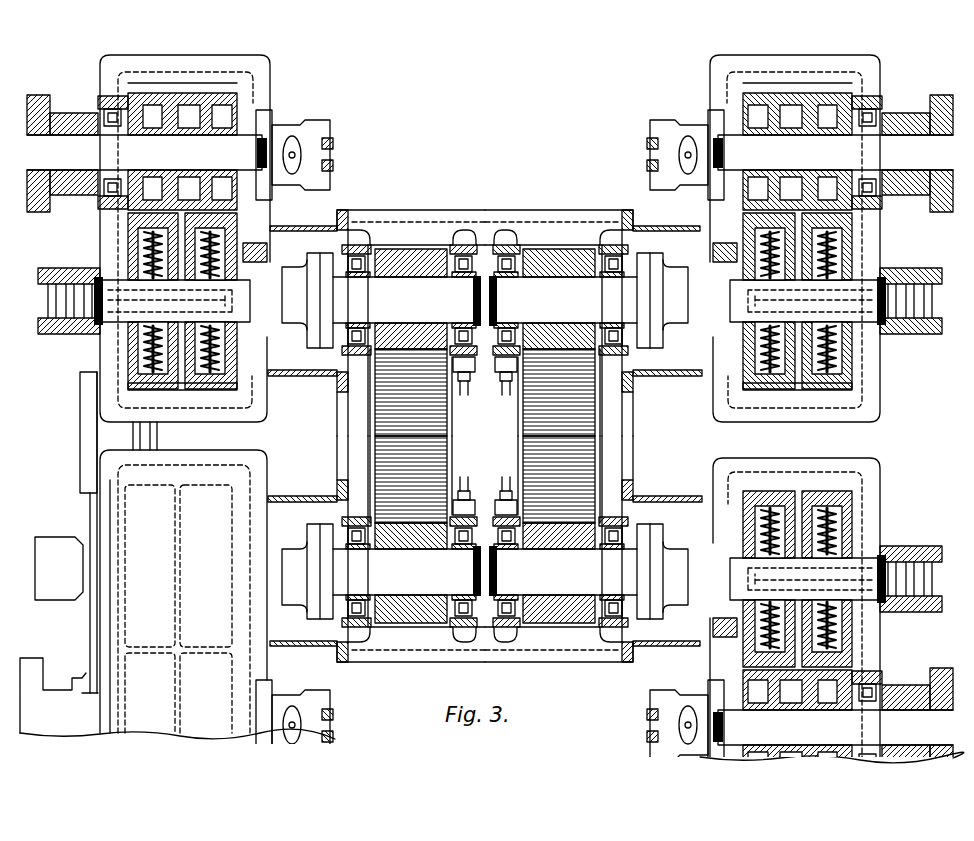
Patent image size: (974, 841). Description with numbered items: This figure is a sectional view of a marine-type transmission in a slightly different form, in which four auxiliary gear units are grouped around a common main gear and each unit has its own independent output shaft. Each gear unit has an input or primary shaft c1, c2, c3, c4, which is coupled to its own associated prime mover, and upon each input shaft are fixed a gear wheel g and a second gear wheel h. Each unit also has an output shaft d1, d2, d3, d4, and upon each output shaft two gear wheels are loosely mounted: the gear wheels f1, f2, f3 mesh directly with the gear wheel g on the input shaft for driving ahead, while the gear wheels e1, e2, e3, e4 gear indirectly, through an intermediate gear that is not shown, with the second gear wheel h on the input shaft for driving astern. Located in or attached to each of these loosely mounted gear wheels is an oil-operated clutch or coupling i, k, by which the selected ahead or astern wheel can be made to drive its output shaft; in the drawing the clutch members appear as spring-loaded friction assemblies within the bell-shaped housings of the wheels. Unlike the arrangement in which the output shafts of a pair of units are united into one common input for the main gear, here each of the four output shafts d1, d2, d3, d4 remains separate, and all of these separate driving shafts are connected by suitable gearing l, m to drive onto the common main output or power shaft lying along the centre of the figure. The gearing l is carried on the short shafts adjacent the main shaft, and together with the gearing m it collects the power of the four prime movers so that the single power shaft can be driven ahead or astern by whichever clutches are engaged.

The input or primary shaft c1 is at (82, 163).
The input or primary shaft c2 is at (891, 147).
The input or primary shaft c3 is at (887, 713).
The input or primary shaft c4 is at (48, 692).
The output shaft d1 is at (95, 336).
The output shaft d2 is at (885, 276).
The output shaft d3 is at (878, 544).
The output shaft d4 is at (58, 540).
The gear wheel e1 is at (132, 383).
The gear wheel e2 is at (843, 387).
The gear wheel e3 is at (150, 558).
The gear wheel e4 is at (863, 488).
The gear wheel f1 is at (220, 388).
The gear wheel f2 is at (745, 388).
The gear wheel f3 is at (215, 494).
The gear wheel g is at (227, 88).
The second gear wheel h is at (100, 97).
The oil-operated clutch or coupling i is at (133, 232).
The oil-operated clutch or coupling k is at (233, 235).
The gearing l is at (398, 250).
The gearing m is at (527, 413).